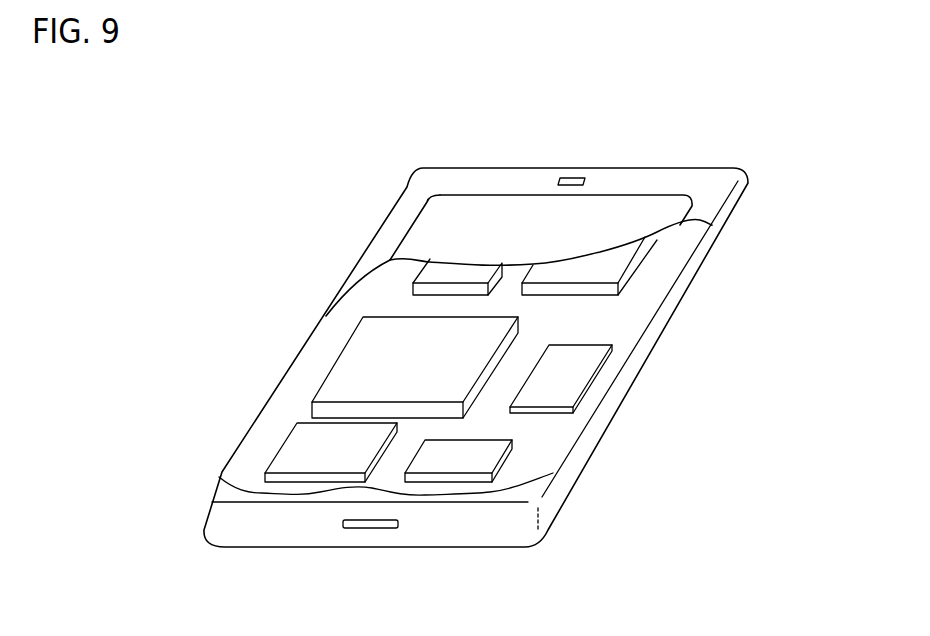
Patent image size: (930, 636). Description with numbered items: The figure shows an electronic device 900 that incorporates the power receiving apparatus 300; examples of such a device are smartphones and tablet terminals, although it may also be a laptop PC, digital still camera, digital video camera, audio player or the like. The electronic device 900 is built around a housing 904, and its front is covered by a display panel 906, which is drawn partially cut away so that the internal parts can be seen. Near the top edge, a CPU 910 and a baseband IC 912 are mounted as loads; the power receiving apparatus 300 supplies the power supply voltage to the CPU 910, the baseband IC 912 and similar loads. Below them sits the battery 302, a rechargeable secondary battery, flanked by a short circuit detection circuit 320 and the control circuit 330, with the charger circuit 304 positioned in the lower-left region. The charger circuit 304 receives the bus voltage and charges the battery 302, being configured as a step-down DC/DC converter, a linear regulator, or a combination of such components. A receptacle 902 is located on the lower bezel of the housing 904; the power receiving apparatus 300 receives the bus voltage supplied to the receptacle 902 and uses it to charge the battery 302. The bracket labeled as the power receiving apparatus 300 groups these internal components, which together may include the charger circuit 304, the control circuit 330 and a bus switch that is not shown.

The electronic device 900 is at (740, 137).
The display panel 906 is at (497, 218).
The baseband IC 912 is at (453, 270).
The CPU 910 is at (607, 267).
The battery 302 is at (352, 370).
The charger circuit 304 is at (305, 447).
The short circuit detection circuit 320 is at (572, 373).
The control circuit 330 is at (483, 458).
The power receiving apparatus 300 is at (660, 490).
The receptacle 902 is at (372, 528).
The housing 904 is at (503, 523).